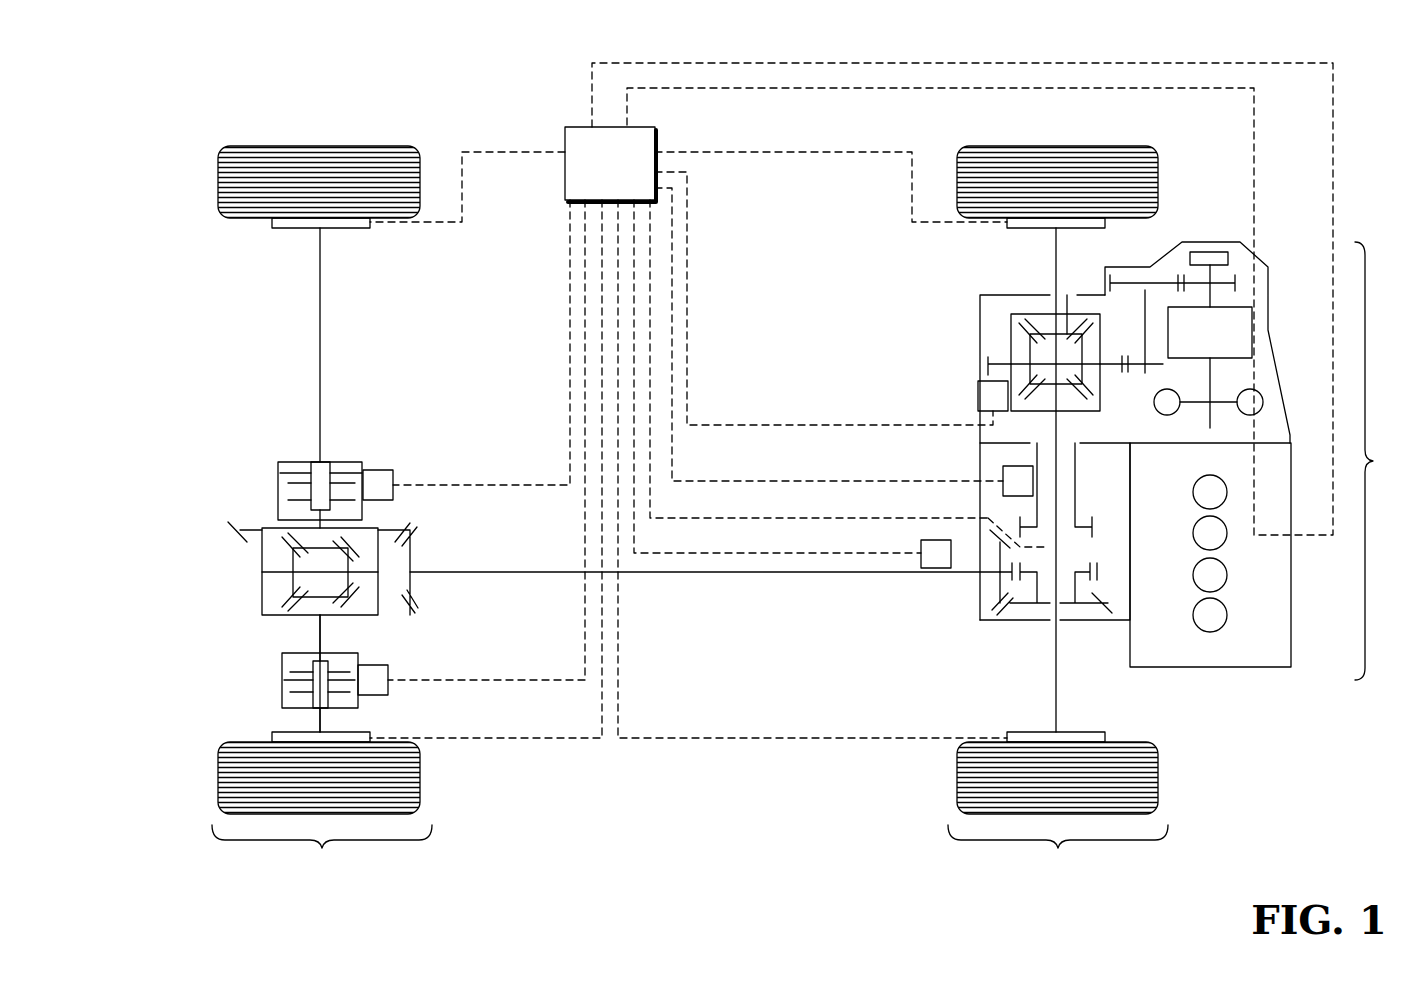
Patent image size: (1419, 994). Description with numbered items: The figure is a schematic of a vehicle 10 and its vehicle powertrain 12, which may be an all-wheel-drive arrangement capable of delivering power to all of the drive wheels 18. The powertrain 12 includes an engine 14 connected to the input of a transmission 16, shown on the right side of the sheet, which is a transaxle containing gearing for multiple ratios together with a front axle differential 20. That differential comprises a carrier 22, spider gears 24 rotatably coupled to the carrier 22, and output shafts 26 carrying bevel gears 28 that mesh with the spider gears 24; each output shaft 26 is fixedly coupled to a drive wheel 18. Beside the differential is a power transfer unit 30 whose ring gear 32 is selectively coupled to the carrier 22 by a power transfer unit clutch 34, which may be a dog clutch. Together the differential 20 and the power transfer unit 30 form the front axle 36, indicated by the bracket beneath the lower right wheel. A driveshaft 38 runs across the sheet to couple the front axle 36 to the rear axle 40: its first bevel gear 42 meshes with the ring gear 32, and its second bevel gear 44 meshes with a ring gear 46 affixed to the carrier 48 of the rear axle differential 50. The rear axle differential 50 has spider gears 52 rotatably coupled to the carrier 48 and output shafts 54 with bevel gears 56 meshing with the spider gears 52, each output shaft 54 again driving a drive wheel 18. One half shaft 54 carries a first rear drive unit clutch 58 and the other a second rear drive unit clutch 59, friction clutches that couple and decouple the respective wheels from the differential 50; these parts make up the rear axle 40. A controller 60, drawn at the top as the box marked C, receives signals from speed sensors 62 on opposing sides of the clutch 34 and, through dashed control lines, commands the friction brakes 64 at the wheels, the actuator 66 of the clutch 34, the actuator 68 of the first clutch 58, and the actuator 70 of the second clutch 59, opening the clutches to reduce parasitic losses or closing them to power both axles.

The vehicle 10 is at (476, 60).
The vehicle powertrain 12 is at (1380, 461).
The engine 14 is at (1243, 680).
The transmission 16 is at (1266, 260).
The drive wheels 18 is at (218, 190).
The front axle differential 20 is at (996, 305).
The carrier 22 is at (1011, 330).
The spider gears 24 is at (1020, 362).
The output shafts 26 is at (1052, 283).
The bevel gears 28 is at (1067, 330).
The power transfer unit 30 is at (973, 629).
The ring gear 32 is at (1015, 612).
The power transfer unit clutch 34 is at (1098, 547).
The front axle 36 is at (1058, 852).
The driveshaft 38 is at (455, 572).
The rear axle 40 is at (322, 852).
The first bevel gear 42 is at (992, 575).
The second bevel gear 44 is at (415, 592).
The ring gear 46 is at (252, 528).
The carrier 48 is at (355, 625).
The rear axle differential 50 is at (203, 576).
The spider gears 52 is at (292, 585).
The output shafts 54 is at (320, 338).
The bevel gears 56 is at (310, 545).
The first rear drive unit clutch 58 is at (370, 432).
The second rear drive unit clutch 59 is at (258, 666).
The controller 60 is at (570, 127).
The speed sensors 62 is at (978, 395).
The friction brakes 64 is at (283, 228).
The actuator 66 is at (1003, 478).
The actuator 68 is at (393, 474).
The actuator 70 is at (375, 696).